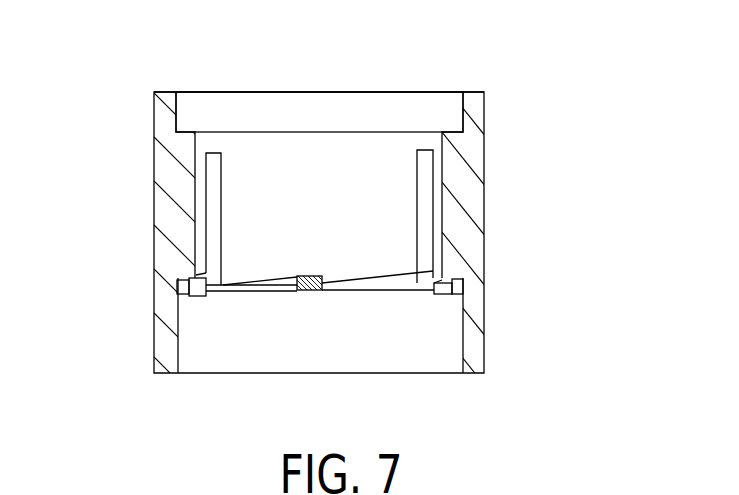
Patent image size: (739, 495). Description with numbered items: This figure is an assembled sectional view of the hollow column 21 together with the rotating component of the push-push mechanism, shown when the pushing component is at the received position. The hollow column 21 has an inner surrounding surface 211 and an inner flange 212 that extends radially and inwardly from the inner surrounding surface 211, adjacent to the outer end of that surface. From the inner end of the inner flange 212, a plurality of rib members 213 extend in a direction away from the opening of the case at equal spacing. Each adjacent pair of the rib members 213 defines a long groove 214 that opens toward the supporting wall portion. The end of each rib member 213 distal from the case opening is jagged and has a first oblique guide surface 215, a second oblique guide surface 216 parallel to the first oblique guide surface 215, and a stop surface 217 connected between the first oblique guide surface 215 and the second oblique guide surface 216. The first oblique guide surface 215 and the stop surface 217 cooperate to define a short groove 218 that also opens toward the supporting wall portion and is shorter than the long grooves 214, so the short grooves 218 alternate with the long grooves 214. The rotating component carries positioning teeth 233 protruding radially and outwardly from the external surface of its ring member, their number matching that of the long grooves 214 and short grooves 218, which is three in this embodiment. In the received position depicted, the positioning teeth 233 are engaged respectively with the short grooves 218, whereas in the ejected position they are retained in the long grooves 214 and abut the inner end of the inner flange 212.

The hollow column 21 is at (497, 117).
The inner surrounding surface 211 is at (200, 113).
The inner flange 212 is at (216, 143).
The rib members 213 is at (316, 173).
The long groove 214 is at (218, 190).
The first oblique guide surface 215 is at (250, 288).
The second oblique guide surface 216 is at (398, 291).
The stop surface 217 is at (303, 291).
The short groove 218 is at (298, 276).
The positioning teeth 233 is at (312, 291).